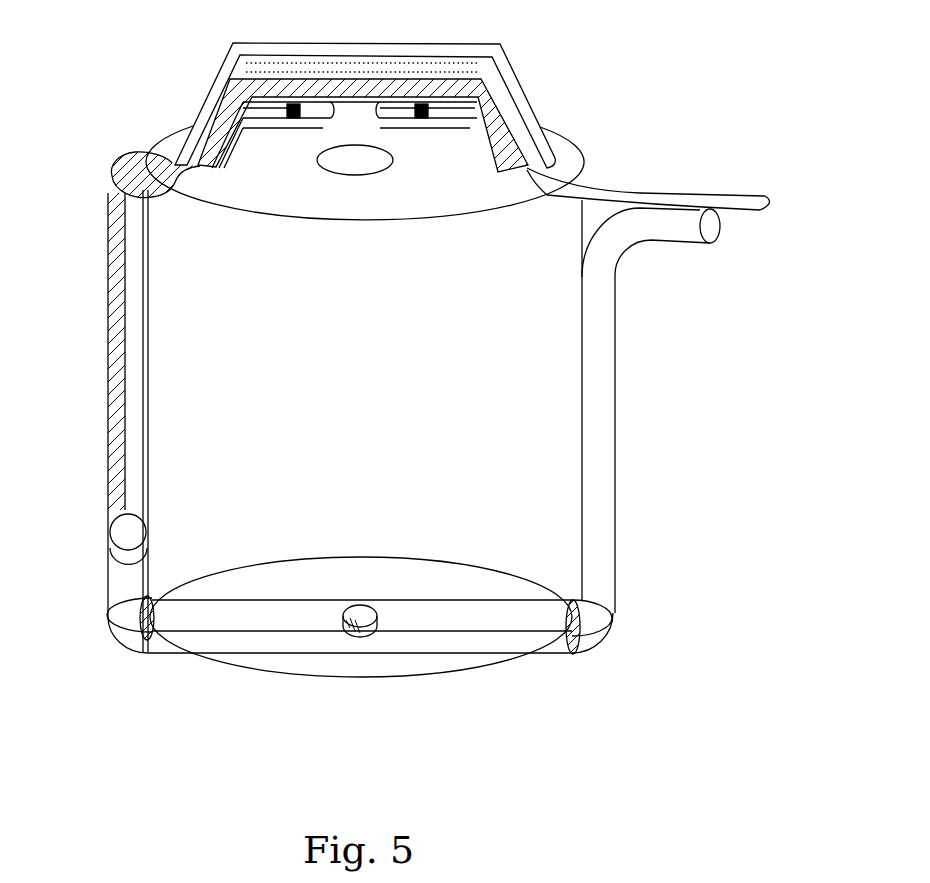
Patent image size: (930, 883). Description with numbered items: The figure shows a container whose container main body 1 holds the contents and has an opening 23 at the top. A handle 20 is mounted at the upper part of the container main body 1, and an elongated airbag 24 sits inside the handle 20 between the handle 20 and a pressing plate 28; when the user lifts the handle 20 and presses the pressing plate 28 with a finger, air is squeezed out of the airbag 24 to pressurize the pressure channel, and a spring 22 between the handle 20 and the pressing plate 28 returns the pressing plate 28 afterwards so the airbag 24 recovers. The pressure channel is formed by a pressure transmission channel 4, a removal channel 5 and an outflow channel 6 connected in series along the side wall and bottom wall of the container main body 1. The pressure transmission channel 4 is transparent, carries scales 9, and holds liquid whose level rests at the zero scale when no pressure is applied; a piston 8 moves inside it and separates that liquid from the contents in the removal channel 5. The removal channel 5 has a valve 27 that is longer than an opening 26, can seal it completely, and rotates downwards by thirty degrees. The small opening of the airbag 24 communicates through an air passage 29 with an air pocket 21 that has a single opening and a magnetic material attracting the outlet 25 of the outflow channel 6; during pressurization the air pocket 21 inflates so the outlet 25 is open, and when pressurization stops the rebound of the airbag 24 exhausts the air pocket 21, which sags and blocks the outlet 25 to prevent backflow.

The container main body 1 is at (527, 448).
The pressure transmission channel 4 is at (130, 430).
The removal channel 5 is at (340, 640).
The outflow channel 6 is at (597, 552).
The piston 8 is at (127, 540).
The scales 9 is at (117, 250).
The handle 20 is at (495, 83).
The air pocket 21 is at (750, 202).
The spring 22 is at (290, 116).
The opening 23 is at (360, 167).
The airbag 24 is at (223, 132).
The outlet 25 is at (708, 228).
The opening 26 is at (366, 612).
The valve 27 is at (367, 640).
The pressing plate 28 is at (347, 102).
The air passage 29 is at (615, 193).